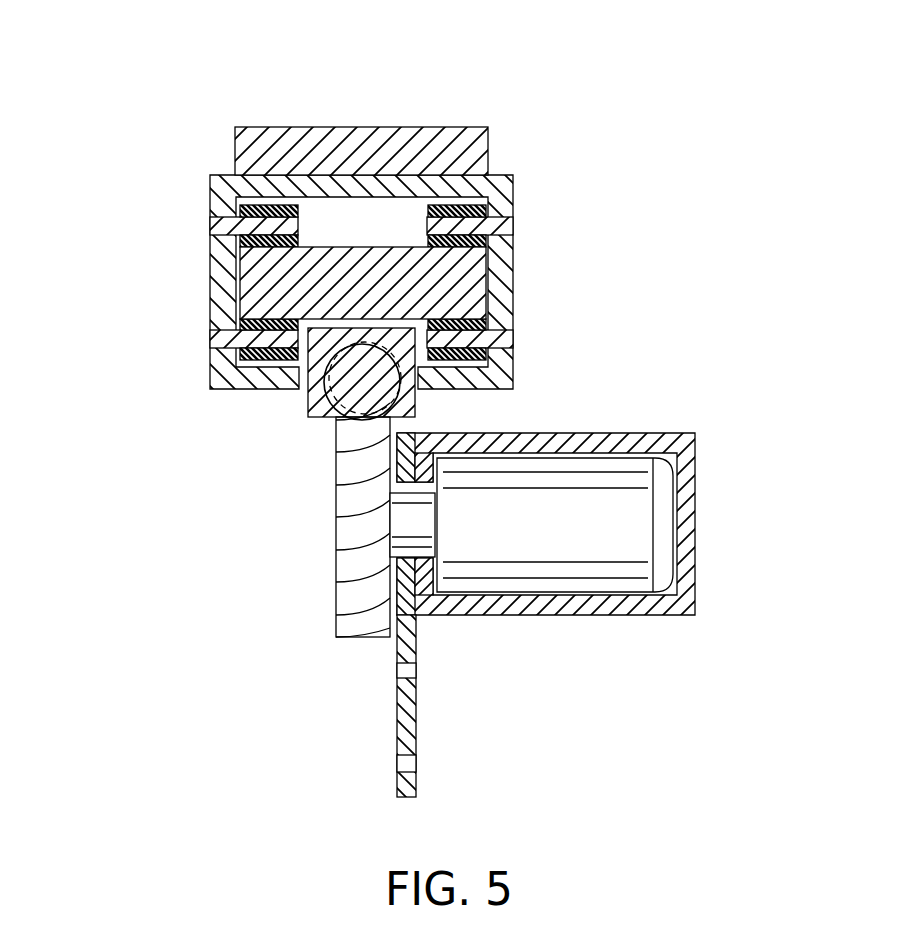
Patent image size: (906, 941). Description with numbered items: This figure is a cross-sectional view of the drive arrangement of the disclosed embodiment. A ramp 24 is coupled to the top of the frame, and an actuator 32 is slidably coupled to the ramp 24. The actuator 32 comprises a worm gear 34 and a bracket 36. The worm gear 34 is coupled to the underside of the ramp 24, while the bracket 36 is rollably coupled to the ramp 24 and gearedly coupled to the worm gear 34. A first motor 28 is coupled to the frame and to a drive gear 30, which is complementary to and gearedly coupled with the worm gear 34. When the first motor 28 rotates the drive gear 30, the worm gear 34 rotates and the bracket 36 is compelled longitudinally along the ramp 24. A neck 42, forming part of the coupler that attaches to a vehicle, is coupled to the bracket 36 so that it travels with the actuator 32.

The ramp 24 is at (268, 278).
The first motor 28 is at (617, 490).
The drive gear 30 is at (350, 497).
The actuator 32 is at (384, 383).
The worm gear 34 is at (337, 415).
The bracket 36 is at (221, 288).
The neck 42 is at (413, 142).